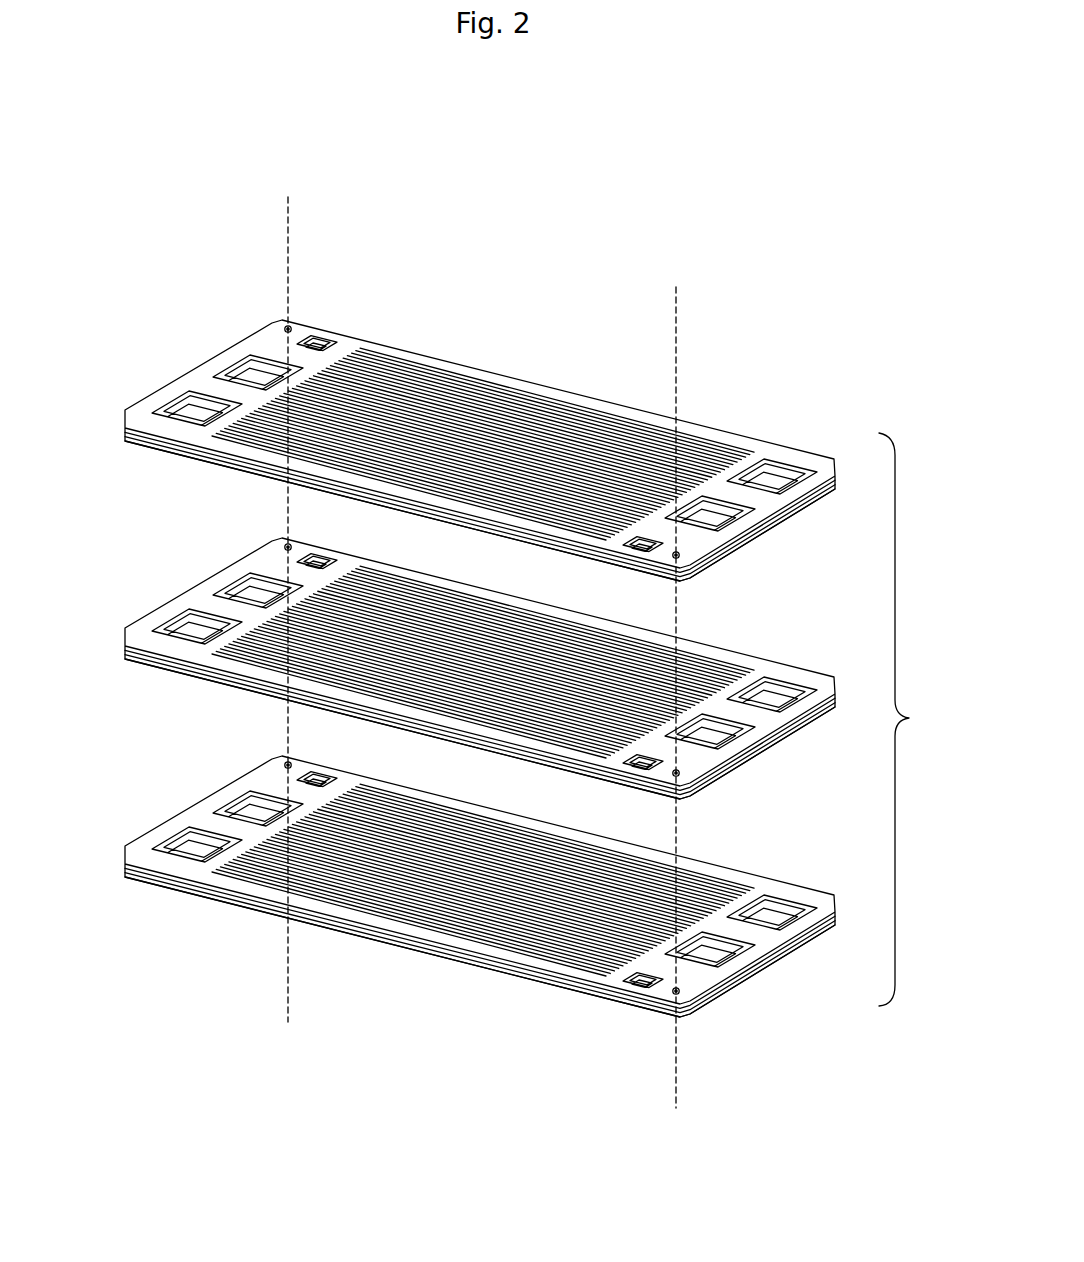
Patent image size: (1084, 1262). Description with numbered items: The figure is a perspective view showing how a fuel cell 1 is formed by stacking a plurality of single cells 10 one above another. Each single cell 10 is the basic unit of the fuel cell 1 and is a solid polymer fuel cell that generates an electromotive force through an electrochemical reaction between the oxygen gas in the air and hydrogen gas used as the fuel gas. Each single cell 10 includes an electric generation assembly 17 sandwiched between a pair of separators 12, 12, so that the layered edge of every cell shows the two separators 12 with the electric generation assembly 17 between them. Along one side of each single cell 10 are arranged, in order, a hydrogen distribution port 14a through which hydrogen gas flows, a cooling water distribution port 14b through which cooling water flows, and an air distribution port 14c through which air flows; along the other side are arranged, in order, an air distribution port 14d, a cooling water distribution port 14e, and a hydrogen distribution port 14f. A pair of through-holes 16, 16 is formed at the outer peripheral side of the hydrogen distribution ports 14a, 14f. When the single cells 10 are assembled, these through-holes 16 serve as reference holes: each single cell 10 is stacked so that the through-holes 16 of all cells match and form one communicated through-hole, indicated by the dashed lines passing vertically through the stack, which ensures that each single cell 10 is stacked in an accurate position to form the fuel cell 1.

The fuel cell 1 is at (945, 727).
The single cell 10 is at (776, 420).
The separator 12 is at (128, 430).
The hydrogen distribution port 14a is at (300, 347).
The cooling water distribution port 14b is at (232, 372).
The air distribution port 14c is at (168, 410).
The air distribution port 14d is at (788, 488).
The cooling water distribution port 14e is at (722, 528).
The hydrogen distribution port 14f is at (640, 551).
The through-hole 16 is at (291, 329).
The electric generation assembly 17 is at (125, 437).